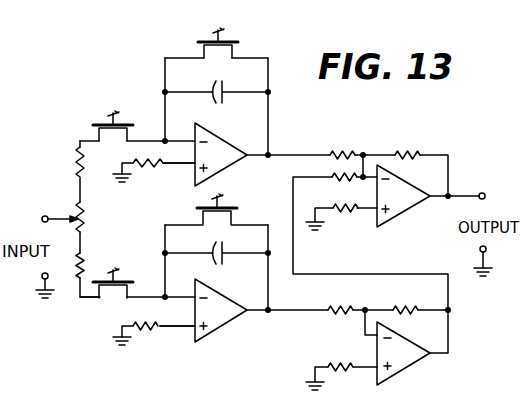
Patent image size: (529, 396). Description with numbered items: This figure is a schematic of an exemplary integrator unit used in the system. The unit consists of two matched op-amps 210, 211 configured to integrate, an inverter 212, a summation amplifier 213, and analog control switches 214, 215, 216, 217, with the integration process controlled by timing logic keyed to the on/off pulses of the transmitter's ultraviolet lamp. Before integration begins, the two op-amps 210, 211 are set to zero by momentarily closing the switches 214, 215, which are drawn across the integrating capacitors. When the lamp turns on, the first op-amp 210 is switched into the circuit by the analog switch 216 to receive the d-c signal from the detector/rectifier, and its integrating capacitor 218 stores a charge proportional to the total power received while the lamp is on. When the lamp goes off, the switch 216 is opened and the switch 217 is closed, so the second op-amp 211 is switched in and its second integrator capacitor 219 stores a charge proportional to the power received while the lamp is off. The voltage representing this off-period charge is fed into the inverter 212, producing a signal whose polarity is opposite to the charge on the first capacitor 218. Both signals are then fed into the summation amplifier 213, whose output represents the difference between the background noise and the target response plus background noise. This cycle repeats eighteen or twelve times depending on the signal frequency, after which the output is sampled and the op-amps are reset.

The first op-amp 210 is at (223, 165).
The second op-amp 211 is at (215, 327).
The inverter 212 is at (412, 358).
The summation amplifier 213 is at (393, 213).
The analog control switch 214 is at (238, 50).
The analog control switch 215 is at (195, 217).
The analog switch 216 is at (95, 132).
The analog control switch 217 is at (105, 298).
The integrating capacitor 218 is at (227, 96).
The second integrator capacitor 219 is at (226, 259).